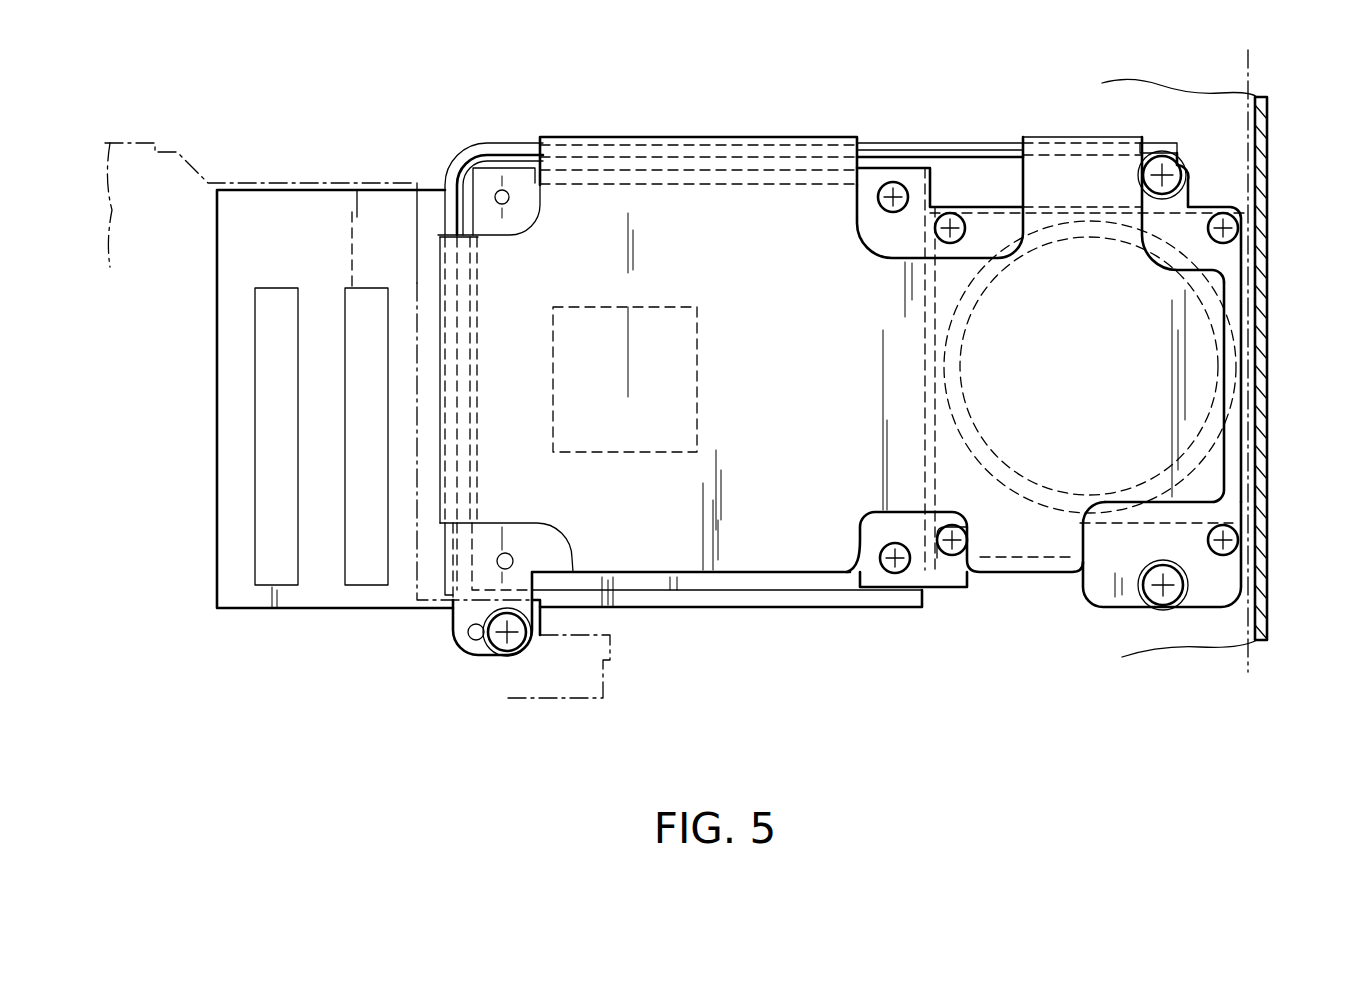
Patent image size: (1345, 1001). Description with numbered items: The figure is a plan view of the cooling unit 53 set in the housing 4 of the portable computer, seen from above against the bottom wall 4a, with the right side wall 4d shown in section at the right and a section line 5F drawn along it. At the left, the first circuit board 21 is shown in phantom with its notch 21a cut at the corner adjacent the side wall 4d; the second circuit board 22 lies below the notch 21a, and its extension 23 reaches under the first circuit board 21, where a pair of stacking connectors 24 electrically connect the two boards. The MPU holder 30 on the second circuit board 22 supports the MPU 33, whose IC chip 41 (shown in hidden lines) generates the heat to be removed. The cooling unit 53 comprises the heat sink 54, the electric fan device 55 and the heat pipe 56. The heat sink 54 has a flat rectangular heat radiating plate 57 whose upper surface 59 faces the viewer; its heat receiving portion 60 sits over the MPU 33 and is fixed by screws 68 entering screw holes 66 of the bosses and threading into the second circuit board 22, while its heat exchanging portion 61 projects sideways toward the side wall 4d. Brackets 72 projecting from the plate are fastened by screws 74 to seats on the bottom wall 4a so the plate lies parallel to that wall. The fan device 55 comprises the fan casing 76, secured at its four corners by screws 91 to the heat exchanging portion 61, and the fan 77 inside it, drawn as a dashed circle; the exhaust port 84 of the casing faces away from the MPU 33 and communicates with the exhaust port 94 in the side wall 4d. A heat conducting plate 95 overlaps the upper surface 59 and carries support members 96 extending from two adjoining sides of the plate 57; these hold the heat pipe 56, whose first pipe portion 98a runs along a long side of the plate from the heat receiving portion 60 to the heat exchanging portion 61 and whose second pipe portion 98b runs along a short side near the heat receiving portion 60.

The housing 4 is at (1268, 117).
The bottom wall 4a is at (1125, 98).
The side wall 4d is at (1268, 180).
The section line 5F is at (1248, 50).
The first circuit board 21 is at (188, 167).
The notch 21a is at (610, 673).
The second circuit board 22 is at (775, 598).
The extension 23 is at (293, 200).
The stacking connectors 24 is at (360, 580).
The MPU holder 30 is at (710, 590).
The MPU 33 is at (647, 587).
The IC chip 41 is at (682, 422).
The cooling unit 53 is at (678, 118).
The heat sink 54 is at (998, 228).
The electric fan device 55 is at (1032, 470).
The heat pipe 56 is at (518, 148).
The heat radiating plate 57 is at (882, 535).
The upper surface 59 is at (893, 248).
The heat receiving portion 60 is at (731, 213).
The heat exchanging portion 61 is at (1228, 455).
The screw hole 66 is at (512, 198).
The screws 68 is at (878, 205).
The brackets 72 is at (1178, 200).
The screws 74 is at (1175, 165).
The fan casing 76 is at (1113, 548).
The fan 77 is at (1038, 541).
The exhaust port 84 is at (1243, 517).
The screws 91 is at (952, 213).
The exhaust port 94 is at (1265, 350).
The heat conducting plate 95 is at (827, 560).
The support members 96 is at (447, 263).
The first pipe portion 98a is at (905, 152).
The second pipe portion 98b is at (450, 560).